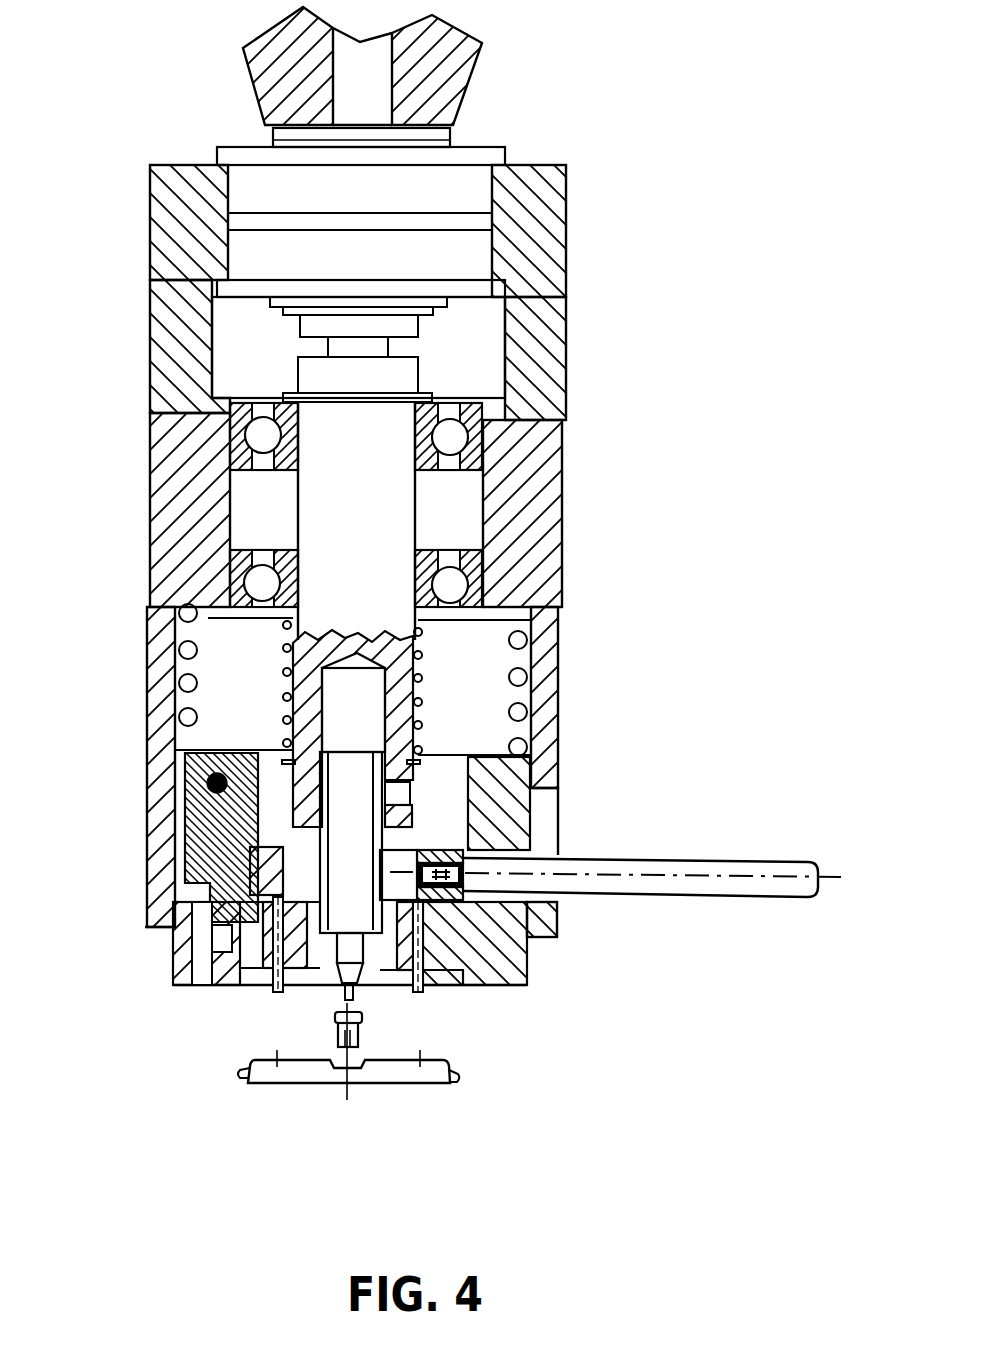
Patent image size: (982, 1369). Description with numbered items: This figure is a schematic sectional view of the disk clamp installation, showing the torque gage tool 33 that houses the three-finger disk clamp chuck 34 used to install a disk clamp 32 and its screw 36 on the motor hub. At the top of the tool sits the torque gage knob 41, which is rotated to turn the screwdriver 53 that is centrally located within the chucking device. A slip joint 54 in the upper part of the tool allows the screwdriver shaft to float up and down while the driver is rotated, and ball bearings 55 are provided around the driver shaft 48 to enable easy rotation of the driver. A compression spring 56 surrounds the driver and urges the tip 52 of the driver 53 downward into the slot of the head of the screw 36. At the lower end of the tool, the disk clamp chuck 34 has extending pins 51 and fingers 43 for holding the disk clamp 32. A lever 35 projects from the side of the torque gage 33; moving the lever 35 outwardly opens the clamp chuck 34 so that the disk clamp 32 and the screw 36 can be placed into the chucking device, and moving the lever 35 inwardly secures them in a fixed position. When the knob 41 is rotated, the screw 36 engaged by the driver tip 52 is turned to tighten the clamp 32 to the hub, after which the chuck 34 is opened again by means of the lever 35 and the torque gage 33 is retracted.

The torque gage knob 41 is at (473, 97).
The torque gage tool 33 is at (568, 222).
The slip joint 54 is at (365, 343).
The ball bearings 55 is at (443, 440).
The shaft 48 is at (320, 533).
The compression spring 56 is at (290, 673).
The screwdriver 53 is at (352, 782).
The fingers 43 is at (212, 953).
The extending pins 51 is at (273, 970).
The lever 35 is at (688, 875).
The tip 52 is at (337, 987).
The disk clamp chuck 34 is at (300, 1002).
The screw 36 is at (360, 1035).
The disk clamp 32 is at (443, 1062).